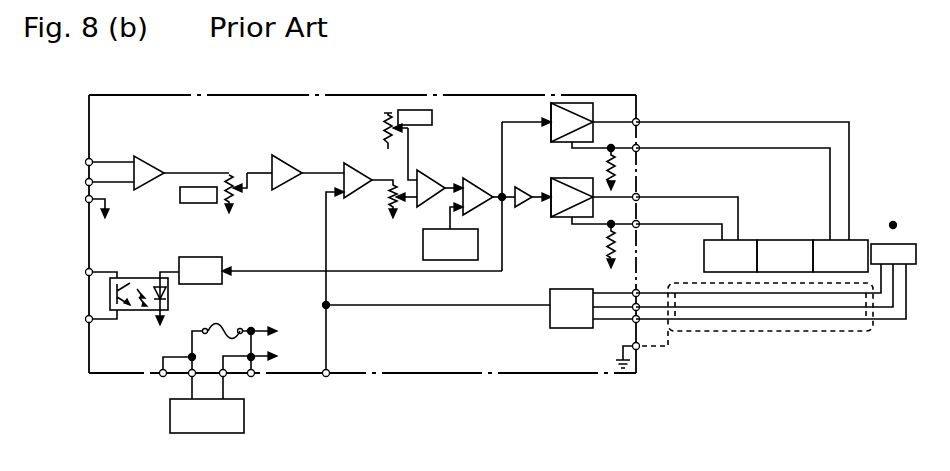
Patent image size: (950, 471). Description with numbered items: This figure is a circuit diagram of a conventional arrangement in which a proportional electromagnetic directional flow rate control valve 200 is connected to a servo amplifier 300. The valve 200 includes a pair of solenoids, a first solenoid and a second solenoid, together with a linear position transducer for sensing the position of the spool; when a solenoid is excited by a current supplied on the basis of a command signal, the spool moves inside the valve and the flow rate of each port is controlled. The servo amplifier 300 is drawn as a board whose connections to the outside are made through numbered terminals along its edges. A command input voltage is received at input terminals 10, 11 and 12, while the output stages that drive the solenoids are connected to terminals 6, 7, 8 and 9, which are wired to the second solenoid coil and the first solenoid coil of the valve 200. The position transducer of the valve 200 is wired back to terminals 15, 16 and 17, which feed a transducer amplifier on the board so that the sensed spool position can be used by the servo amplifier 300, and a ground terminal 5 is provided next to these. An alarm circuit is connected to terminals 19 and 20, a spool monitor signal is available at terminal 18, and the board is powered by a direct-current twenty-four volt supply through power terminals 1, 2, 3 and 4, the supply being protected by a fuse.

The proportional electromagnetic directional flow rate control valve 200 is at (797, 225).
The servo amplifier 300 is at (500, 373).
The power terminal 1 is at (166, 382).
The power terminal 2 (+) 2 is at (196, 382).
The power terminal 3 (-) 3 is at (227, 382).
The power terminal 4 is at (253, 382).
The ground terminal 5 is at (644, 355).
The solenoid b output terminal 6 is at (642, 116).
The solenoid b output terminal 7 is at (642, 143).
The solenoid a output terminal 8 is at (642, 192).
The solenoid a output terminal 9 is at (642, 220).
The input voltage terminal 10 is at (81, 171).
The input voltage terminal 11 is at (81, 189).
The terminal 12 is at (81, 208).
The LVDT terminal 15 is at (645, 288).
The LVDT terminal 16 is at (645, 302).
The LVDT terminal 17 is at (645, 328).
The spool monitor terminal 18 (S.M) 18 is at (334, 389).
The alarm output terminal 19 is at (81, 266).
The alarm output terminal 20 is at (81, 314).